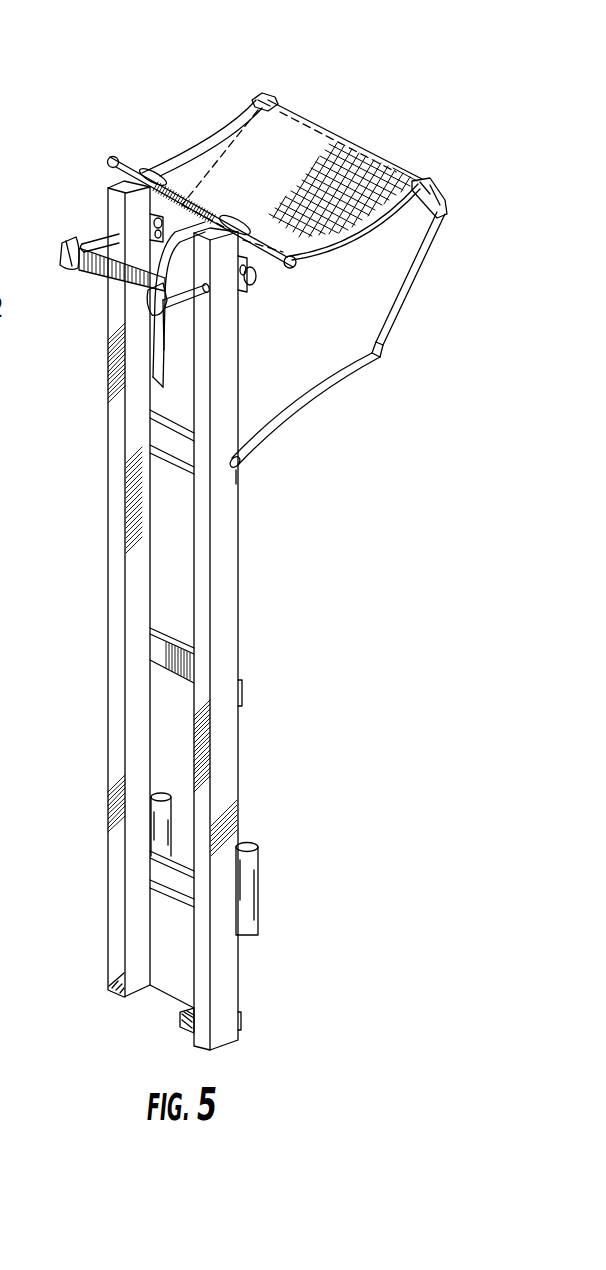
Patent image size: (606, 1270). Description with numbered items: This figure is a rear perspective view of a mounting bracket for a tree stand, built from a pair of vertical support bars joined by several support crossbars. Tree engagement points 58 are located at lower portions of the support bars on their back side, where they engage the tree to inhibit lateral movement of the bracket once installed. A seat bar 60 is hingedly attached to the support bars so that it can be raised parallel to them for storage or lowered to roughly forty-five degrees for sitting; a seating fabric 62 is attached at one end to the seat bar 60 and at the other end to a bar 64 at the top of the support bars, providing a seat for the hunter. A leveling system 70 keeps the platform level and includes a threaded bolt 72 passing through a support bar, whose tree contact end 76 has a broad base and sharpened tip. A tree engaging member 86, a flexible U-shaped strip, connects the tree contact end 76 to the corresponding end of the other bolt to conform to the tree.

The tree engagement points 58 is at (181, 1022).
The seat bar 60 is at (268, 96).
The seating fabric 62 is at (292, 140).
The bar 64 is at (112, 159).
The leveling system 70 is at (62, 224).
The threaded bolt 72 is at (105, 304).
The tree contact end 76 is at (61, 247).
The tree engaging member 86 is at (128, 278).